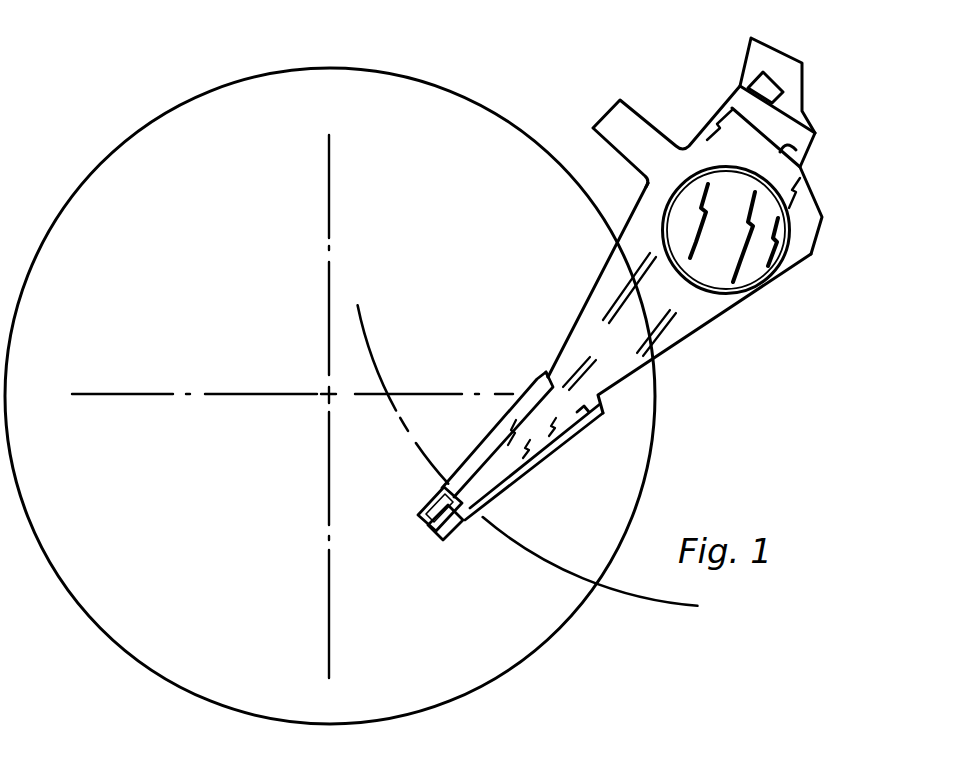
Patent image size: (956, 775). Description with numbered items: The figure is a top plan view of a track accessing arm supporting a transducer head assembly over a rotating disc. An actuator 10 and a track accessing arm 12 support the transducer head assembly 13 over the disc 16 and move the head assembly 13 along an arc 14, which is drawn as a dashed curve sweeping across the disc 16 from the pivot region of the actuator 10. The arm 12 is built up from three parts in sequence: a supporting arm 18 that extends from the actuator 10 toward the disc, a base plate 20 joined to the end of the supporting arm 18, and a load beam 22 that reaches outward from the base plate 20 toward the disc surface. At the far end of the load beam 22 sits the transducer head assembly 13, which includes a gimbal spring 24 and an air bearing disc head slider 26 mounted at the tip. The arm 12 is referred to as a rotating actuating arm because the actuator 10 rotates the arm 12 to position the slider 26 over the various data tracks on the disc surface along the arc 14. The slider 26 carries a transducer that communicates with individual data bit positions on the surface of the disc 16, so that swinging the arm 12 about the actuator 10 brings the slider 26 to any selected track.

The actuator 10 is at (742, 260).
The track accessing arm 12 is at (662, 354).
The transducer head assembly 13 is at (430, 502).
The arc 14 is at (505, 545).
The disc 16 is at (201, 92).
The supporting arm 18 is at (603, 284).
The base plate 20 is at (533, 380).
The load beam 22 is at (510, 450).
The gimbal spring 24 is at (422, 528).
The air bearing disc head slider 26 is at (462, 540).